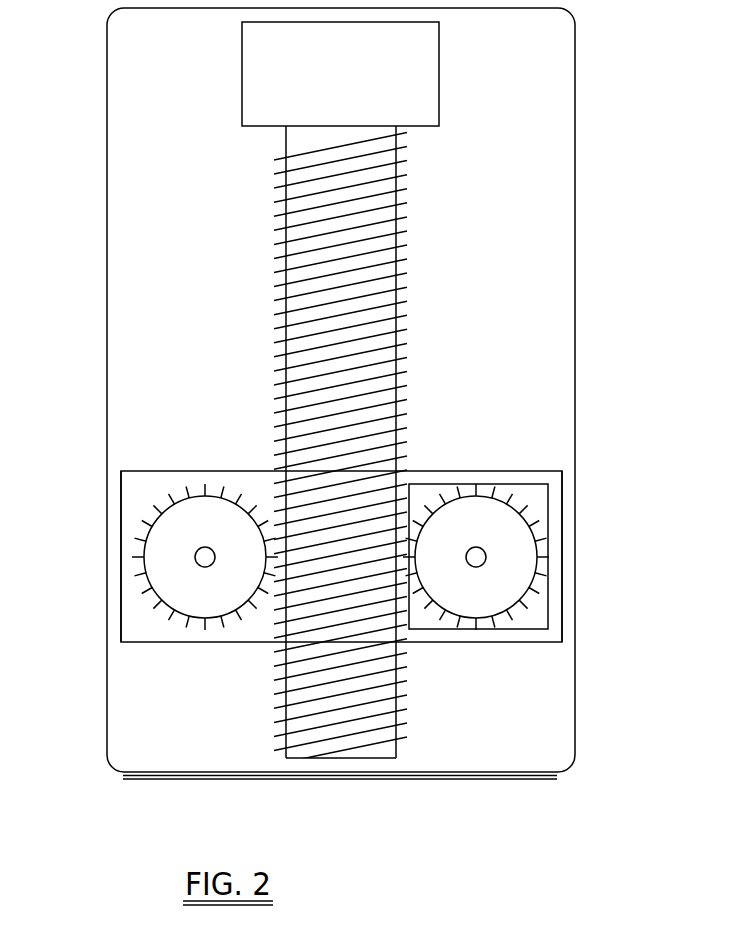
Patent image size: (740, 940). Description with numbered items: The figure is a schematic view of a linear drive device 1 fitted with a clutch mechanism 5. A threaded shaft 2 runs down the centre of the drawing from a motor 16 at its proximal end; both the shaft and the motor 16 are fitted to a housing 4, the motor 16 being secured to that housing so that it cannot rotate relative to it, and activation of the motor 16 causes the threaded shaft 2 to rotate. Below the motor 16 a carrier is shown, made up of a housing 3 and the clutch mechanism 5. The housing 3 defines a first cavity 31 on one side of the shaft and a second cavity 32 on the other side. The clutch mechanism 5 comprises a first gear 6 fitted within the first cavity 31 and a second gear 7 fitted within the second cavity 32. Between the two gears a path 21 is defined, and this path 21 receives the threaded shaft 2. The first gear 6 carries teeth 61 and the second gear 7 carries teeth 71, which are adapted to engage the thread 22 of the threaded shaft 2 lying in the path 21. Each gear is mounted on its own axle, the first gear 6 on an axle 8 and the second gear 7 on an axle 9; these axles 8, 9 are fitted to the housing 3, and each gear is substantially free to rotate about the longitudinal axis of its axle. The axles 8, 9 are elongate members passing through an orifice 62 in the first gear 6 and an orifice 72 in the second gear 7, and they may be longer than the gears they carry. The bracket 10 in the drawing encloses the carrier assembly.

The linear drive device 1 is at (502, 785).
The threaded shaft 2 is at (388, 268).
The housing 3 is at (557, 553).
The housing 4 is at (543, 87).
The clutch mechanism 5 is at (105, 587).
The first gear 6 is at (476, 557).
The second gear 7 is at (205, 557).
The axle 8 is at (477, 547).
The axle 9 is at (205, 547).
The gear box 10 is at (540, 495).
The motor 16 is at (340, 74).
The path 21 is at (413, 779).
The thread 22 is at (412, 228).
The first cavity 31 is at (479, 652).
The second cavity 32 is at (195, 664).
The teeth 61 is at (540, 588).
The orifice 62 is at (470, 563).
The teeth 71 is at (133, 555).
The orifice 72 is at (212, 550).